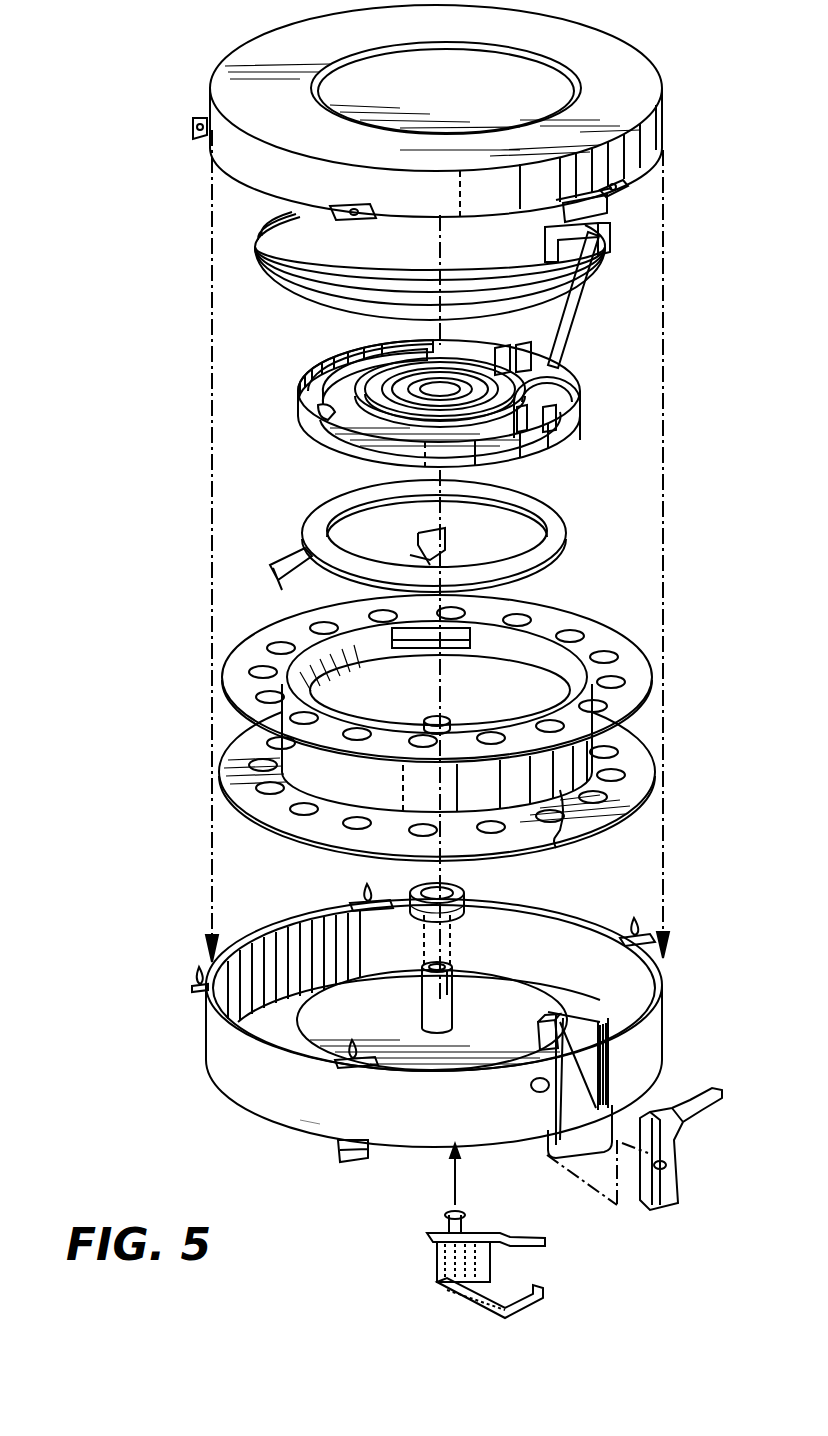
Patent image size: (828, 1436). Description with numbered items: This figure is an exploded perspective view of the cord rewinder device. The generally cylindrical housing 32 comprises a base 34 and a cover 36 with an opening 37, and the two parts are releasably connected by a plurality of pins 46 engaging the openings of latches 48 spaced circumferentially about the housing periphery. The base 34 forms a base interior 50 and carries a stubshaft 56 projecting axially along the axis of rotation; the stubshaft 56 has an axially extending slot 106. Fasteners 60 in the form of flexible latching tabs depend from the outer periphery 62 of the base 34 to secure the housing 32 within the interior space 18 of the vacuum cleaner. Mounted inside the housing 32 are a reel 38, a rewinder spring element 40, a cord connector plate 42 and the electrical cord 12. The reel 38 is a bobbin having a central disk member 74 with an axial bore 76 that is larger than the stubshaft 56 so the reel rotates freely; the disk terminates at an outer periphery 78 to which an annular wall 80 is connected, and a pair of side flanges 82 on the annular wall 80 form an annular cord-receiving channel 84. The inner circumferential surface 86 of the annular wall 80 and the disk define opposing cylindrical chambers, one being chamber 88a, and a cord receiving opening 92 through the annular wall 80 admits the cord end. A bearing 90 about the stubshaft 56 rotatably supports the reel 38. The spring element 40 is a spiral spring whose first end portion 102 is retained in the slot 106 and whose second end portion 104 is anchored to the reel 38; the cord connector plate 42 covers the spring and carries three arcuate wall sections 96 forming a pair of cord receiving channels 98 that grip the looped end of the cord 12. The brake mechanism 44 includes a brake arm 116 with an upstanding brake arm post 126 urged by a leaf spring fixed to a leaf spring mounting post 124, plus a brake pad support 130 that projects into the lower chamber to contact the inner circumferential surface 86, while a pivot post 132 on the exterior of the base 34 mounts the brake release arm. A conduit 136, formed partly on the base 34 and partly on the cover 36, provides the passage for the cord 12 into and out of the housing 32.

The cord 12 is at (598, 274).
The interior space 18 is at (662, 1170).
The housing 32 is at (244, 162).
The base 34 is at (207, 1022).
The cover 36 is at (263, 58).
The opening 37 is at (462, 97).
The reel 38 is at (636, 770).
The rewinder spring element 40 is at (565, 545).
The cord connector plate 42 is at (540, 445).
The brake mechanism 44 is at (524, 1278).
The pins 46 is at (362, 887).
The latches 48 is at (192, 128).
The base interior 50 is at (525, 957).
The stubshaft 56 is at (424, 1005).
The fasteners 60 is at (340, 1150).
The outer periphery 62 is at (278, 1110).
The central disk member 74 is at (585, 652).
The axial bore 76 is at (432, 719).
The outer periphery 78 is at (340, 685).
The annular wall 80 is at (556, 840).
The side flanges 82 is at (236, 666).
The cord-receiving channel 84 is at (366, 787).
The inner circumferential surface 86 is at (555, 660).
The cylindrical chamber 88a is at (480, 685).
The bearing 90 is at (466, 892).
The cord receiving opening 92 is at (392, 630).
The arcuate-shaped wall sections 96 is at (340, 342).
The cord receiving channels 98 is at (318, 412).
The first end portion 102 is at (448, 540).
The second end portion 104 is at (282, 562).
The axially extending slot 106 is at (460, 985).
The brake arm 116 is at (480, 1296).
The leaf spring mounting post 124 is at (538, 1030).
The brake arm post 126 is at (446, 1218).
The brake pad support 130 is at (448, 1265).
The pivot post 132 is at (530, 1086).
The conduit 136 is at (630, 236).